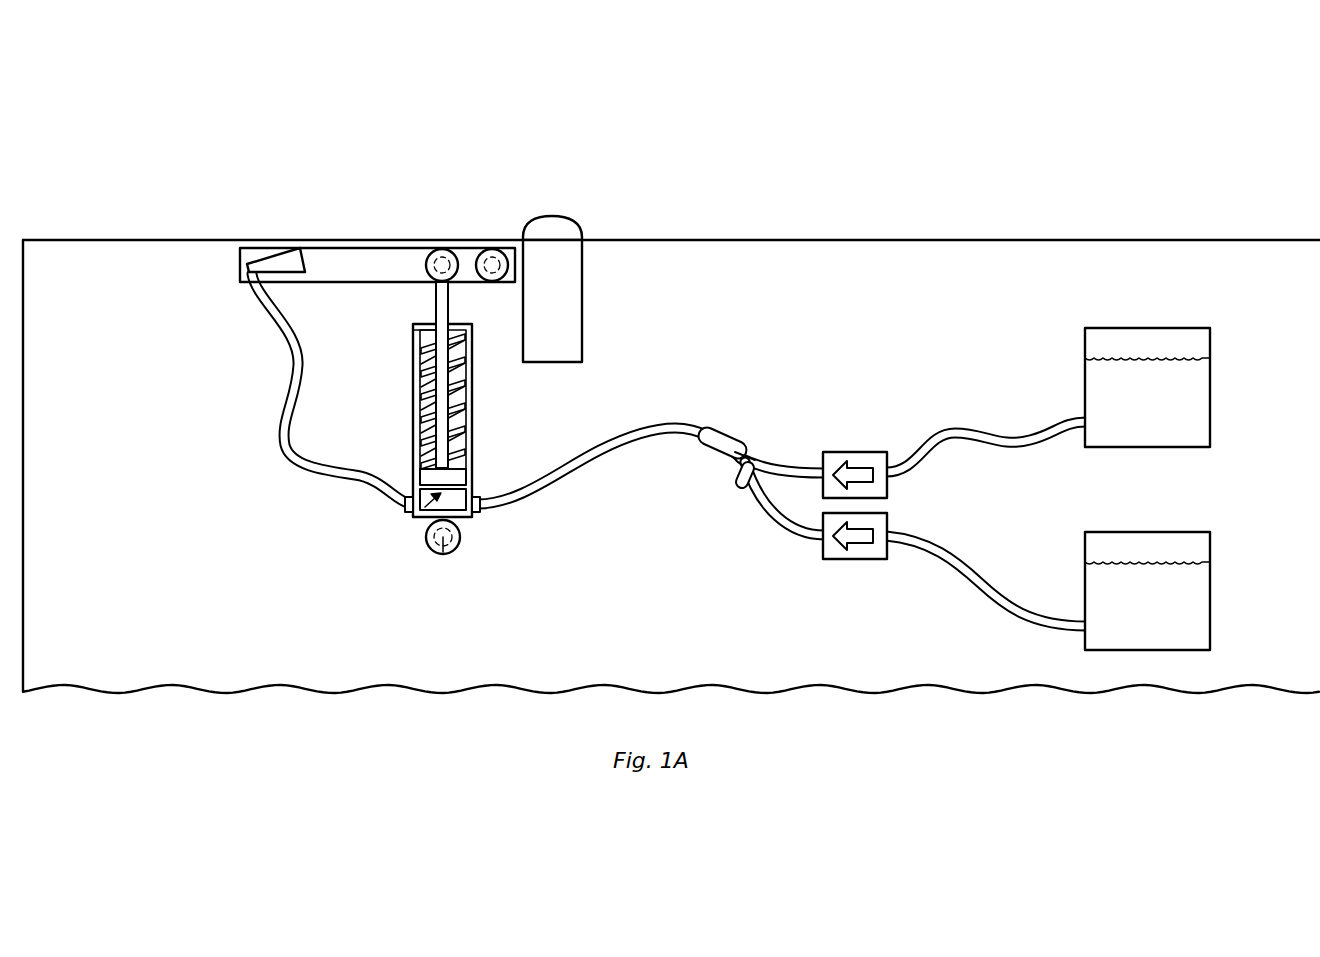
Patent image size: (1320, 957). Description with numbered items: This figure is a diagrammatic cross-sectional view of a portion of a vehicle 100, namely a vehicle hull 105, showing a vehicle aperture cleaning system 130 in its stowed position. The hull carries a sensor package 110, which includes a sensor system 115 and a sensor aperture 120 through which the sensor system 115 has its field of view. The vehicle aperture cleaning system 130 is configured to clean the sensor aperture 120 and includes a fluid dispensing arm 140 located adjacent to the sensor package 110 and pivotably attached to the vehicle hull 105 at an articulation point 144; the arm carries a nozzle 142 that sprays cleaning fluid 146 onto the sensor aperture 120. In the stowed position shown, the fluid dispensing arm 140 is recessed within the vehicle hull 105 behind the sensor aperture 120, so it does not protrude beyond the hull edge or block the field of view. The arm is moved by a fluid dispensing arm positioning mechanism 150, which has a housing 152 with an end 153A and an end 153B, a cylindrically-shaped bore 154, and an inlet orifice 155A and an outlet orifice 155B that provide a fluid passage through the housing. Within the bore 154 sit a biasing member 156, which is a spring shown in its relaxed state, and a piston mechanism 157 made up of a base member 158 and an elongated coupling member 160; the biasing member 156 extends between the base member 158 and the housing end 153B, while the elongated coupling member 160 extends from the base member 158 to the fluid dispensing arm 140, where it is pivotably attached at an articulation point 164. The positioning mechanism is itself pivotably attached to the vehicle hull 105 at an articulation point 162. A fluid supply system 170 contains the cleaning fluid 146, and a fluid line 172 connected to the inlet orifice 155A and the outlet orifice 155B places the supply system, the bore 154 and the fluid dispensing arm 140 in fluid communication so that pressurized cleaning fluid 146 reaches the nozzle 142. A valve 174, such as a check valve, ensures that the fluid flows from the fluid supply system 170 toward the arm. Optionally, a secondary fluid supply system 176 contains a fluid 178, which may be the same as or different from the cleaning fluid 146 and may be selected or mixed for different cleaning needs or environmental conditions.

The vehicle 100 is at (978, 84).
The vehicle hull 105 is at (990, 239).
The sensor package 110 is at (603, 270).
The sensor system 115 is at (583, 311).
The sensor aperture 120 is at (570, 220).
The vehicle aperture cleaning system 130 is at (195, 376).
The fluid dispensing arm 140 is at (358, 247).
The nozzle 142 is at (272, 255).
The articulation point 144 is at (484, 249).
The cleaning fluid 146 is at (1200, 355).
The fluid dispensing arm positioning mechanism 150 is at (488, 442).
The housing 152 is at (413, 396).
The end 153A is at (466, 519).
The end 153B is at (418, 323).
The bore 154 is at (422, 518).
The inlet orifice 155A is at (482, 508).
The outlet orifice 155B is at (404, 500).
The biasing member 156 is at (462, 408).
The piston mechanism 157 is at (425, 359).
The base member 158 is at (458, 478).
The elongated coupling member 160 is at (456, 376).
The articulation point 162 is at (440, 555).
The articulation point 164 is at (436, 249).
The fluid supply system 170 is at (1152, 327).
The fluid line 172 is at (666, 440).
The valve 174 is at (857, 451).
The secondary fluid supply system 176 is at (1152, 531).
The fluid 178 is at (1200, 560).